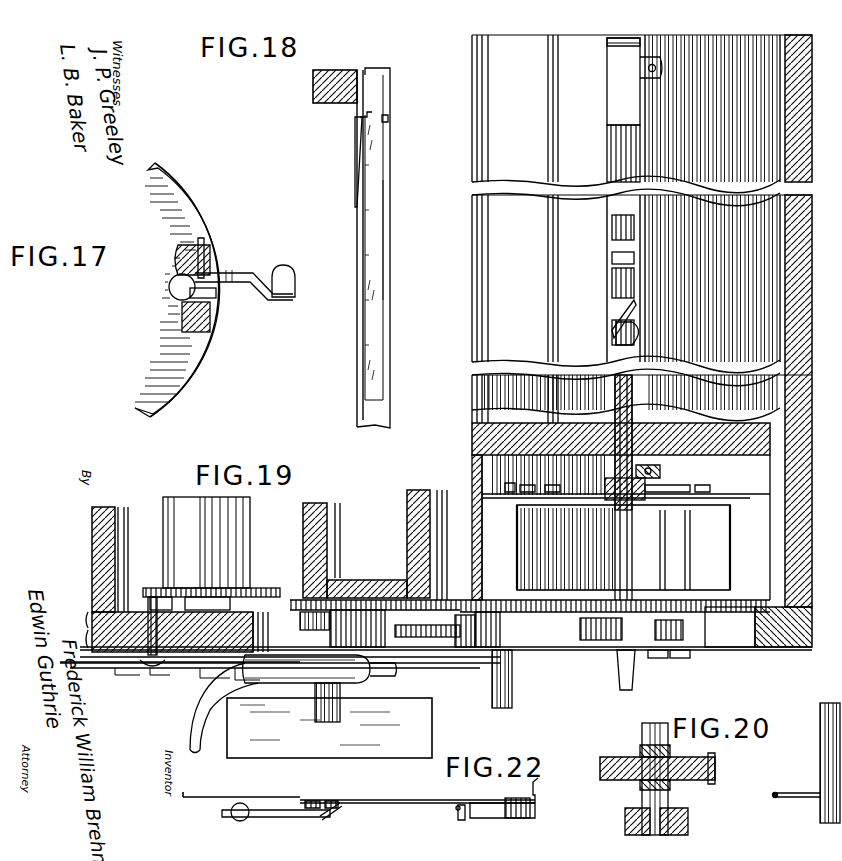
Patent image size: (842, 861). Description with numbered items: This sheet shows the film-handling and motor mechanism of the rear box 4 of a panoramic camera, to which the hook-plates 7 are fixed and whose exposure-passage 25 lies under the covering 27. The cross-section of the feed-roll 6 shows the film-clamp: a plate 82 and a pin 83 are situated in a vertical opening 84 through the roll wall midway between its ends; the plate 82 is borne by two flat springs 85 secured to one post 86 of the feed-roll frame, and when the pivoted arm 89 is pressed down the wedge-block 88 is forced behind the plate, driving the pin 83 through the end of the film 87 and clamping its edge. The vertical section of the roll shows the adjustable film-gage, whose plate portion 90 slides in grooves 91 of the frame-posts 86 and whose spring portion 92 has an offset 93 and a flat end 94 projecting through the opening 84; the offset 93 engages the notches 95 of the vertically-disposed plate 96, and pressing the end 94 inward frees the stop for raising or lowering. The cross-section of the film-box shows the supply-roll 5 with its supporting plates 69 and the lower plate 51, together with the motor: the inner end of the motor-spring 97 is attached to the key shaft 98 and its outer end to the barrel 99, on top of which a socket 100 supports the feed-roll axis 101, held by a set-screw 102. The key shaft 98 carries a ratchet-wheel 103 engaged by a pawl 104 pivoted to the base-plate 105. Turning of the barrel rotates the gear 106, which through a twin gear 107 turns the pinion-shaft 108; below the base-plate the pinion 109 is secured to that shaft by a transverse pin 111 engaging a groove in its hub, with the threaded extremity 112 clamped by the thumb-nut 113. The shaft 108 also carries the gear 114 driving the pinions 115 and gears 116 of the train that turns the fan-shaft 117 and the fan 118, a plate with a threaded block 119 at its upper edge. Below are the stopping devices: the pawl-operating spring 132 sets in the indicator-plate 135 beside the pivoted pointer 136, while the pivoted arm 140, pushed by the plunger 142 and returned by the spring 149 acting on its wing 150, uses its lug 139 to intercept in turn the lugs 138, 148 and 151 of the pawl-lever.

In FIG. 19, the rear box 4 is at (809, 321).
In FIG. 19, the supply-roll 5 is at (175, 508).
In FIG. 17, the feed-roll 6 is at (171, 290).
In FIG. 18, the feed-roll 6 is at (328, 102).
In FIG. 19, the feed-roll 6 is at (579, 278).
In FIG. 20, the hook-plates 7 is at (798, 792).
In FIG. 19, the exposure-passage 25 is at (375, 545).
In FIG. 19, the covering 27 is at (150, 668).
In FIG. 19, the lower plate 51 is at (232, 605).
In FIG. 19, the plate 69 is at (250, 590).
In FIG. 17, the plate 82 is at (192, 292).
In FIG. 19, the plate 82 is at (612, 282).
In FIG. 17, the pin 83 is at (188, 312).
In FIG. 17, the vertical opening 84 is at (170, 285).
In FIG. 19, the vertical opening 84 is at (610, 142).
In FIG. 17, the flat springs 85 is at (178, 250).
In FIG. 19, the flat springs 85 is at (612, 300).
In FIG. 17, the post 86 is at (210, 255).
In FIG. 17, the film 87 is at (160, 410).
In FIG. 18, the film 87 is at (390, 372).
In FIG. 17, the wedge-block 88 is at (232, 290).
In FIG. 19, the wedge-block 88 is at (612, 260).
In FIG. 17, the pivoted arm 89 is at (283, 270).
In FIG. 19, the pivoted arm 89 is at (640, 330).
In FIG. 18, the plate portion 90 is at (357, 143).
In FIG. 18, the grooves 91 is at (355, 307).
In FIG. 18, the spring portion 92 is at (368, 181).
In FIG. 19, the spring portion 92 is at (625, 98).
In FIG. 18, the offset 93 is at (388, 103).
In FIG. 18, the flat end 94 is at (390, 125).
In FIG. 19, the flat end 94 is at (610, 45).
In FIG. 18, the notches 95 is at (385, 254).
In FIG. 18, the plate 96 is at (378, 308).
In FIG. 19, the motor-spring 97 is at (705, 538).
In FIG. 19, the key shaft 98 is at (618, 655).
In FIG. 19, the barrel 99 is at (730, 560).
In FIG. 19, the socket 100 is at (612, 478).
In FIG. 19, the feed-roll axis 101 is at (615, 392).
In FIG. 19, the set-screw 102 is at (660, 471).
In FIG. 19, the ratchet-wheel 103 is at (600, 640).
In FIG. 19, the pawl 104 is at (662, 655).
In FIG. 19, the base-plate 105 is at (742, 650).
In FIG. 22, the base-plate 105 is at (185, 800).
In FIG. 19, the gear 106 is at (735, 632).
In FIG. 19, the twin gear 107 is at (520, 612).
In FIG. 19, the pinion-shaft 108 is at (512, 685).
In FIG. 20, the pinion-shaft 108 is at (650, 733).
In FIG. 20, the pinion 109 is at (715, 770).
In FIG. 20, the pin 111 is at (650, 758).
In FIG. 20, the threaded extremity 112 is at (625, 827).
In FIG. 20, the thumb-nut 113 is at (688, 827).
In FIG. 19, the gear 114 is at (480, 648).
In FIG. 19, the pinions 115 is at (410, 650).
In FIG. 19, the gears 116 is at (460, 650).
In FIG. 19, the fan-shaft 117 is at (355, 683).
In FIG. 19, the fan 118 is at (329, 728).
In FIG. 19, the block 119 is at (318, 715).
In FIG. 19, the pawl-operating spring 132 is at (110, 672).
In FIG. 19, the indicator-plate 135 is at (88, 618).
In FIG. 19, the pointer 136 is at (88, 645).
In FIG. 22, the lug 138 is at (312, 810).
In FIG. 22, the lug 139 is at (298, 800).
In FIG. 22, the pivoted arm 140 is at (395, 800).
In FIG. 22, the plunger 142 is at (238, 822).
In FIG. 22, the lug 148 is at (335, 812).
In FIG. 22, the spring 149 is at (485, 818).
In FIG. 22, the wing 150 is at (460, 820).
In FIG. 22, the lug 151 is at (345, 812).